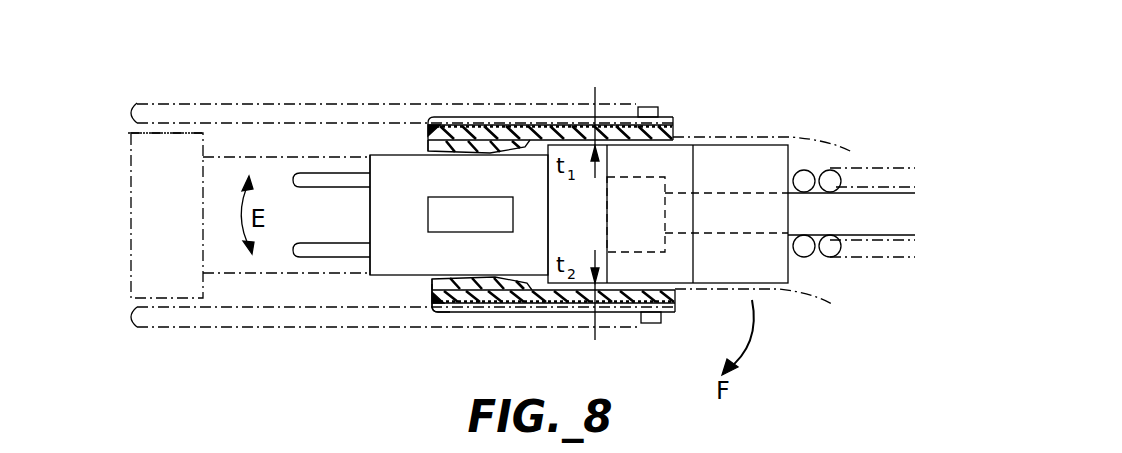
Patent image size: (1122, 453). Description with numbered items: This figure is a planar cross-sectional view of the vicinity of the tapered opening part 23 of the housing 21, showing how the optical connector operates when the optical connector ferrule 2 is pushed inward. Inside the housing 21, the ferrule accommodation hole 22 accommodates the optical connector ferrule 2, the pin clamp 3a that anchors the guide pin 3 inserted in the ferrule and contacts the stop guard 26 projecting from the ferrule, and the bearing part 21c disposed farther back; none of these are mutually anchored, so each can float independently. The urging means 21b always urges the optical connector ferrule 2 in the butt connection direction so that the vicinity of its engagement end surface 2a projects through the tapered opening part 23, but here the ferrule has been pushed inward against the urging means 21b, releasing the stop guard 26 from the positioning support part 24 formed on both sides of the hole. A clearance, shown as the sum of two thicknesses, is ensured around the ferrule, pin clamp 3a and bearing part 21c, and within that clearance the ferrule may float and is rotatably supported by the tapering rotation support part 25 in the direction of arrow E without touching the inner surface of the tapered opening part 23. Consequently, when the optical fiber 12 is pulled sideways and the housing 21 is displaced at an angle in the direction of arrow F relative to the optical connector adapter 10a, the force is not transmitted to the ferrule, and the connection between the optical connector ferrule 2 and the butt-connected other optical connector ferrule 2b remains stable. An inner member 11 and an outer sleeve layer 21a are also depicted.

The optical connector ferrule 2 is at (392, 155).
The engagement end surface 2a is at (368, 274).
The another optical connector ferrule 2b is at (255, 268).
The guide pin 3 is at (297, 250).
The pin clamp 3a is at (695, 283).
The optical connector adapter 10a is at (300, 322).
The inner member 11 is at (636, 176).
The optical fiber 12 is at (885, 205).
The housing 21 is at (637, 107).
The sleeve outer layer 21a is at (467, 117).
The urging means 21b is at (828, 170).
The bearing part 21c is at (777, 292).
The ferrule accommodation hole 22 is at (650, 304).
The tapered opening part 23 is at (425, 283).
The positioning support part 24 is at (531, 140).
The rotation support part 25 is at (492, 154).
The stop guard 26 is at (573, 143).